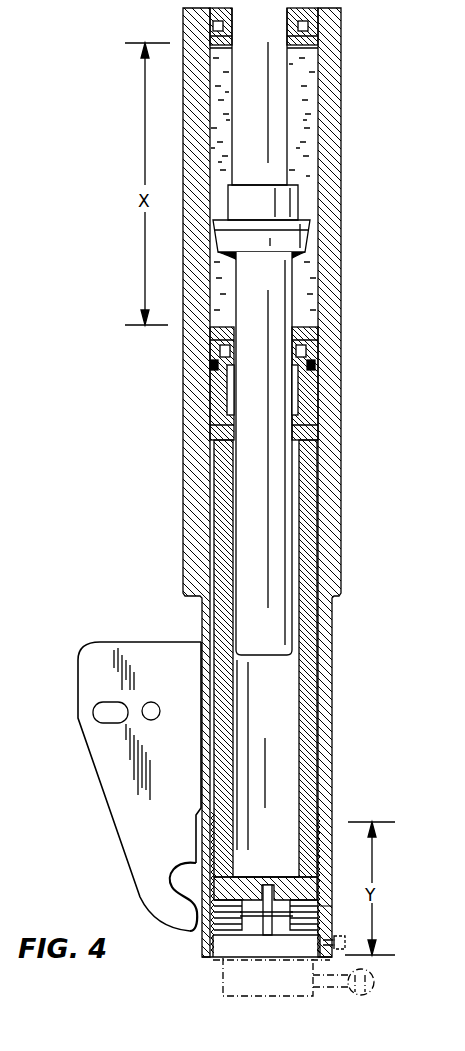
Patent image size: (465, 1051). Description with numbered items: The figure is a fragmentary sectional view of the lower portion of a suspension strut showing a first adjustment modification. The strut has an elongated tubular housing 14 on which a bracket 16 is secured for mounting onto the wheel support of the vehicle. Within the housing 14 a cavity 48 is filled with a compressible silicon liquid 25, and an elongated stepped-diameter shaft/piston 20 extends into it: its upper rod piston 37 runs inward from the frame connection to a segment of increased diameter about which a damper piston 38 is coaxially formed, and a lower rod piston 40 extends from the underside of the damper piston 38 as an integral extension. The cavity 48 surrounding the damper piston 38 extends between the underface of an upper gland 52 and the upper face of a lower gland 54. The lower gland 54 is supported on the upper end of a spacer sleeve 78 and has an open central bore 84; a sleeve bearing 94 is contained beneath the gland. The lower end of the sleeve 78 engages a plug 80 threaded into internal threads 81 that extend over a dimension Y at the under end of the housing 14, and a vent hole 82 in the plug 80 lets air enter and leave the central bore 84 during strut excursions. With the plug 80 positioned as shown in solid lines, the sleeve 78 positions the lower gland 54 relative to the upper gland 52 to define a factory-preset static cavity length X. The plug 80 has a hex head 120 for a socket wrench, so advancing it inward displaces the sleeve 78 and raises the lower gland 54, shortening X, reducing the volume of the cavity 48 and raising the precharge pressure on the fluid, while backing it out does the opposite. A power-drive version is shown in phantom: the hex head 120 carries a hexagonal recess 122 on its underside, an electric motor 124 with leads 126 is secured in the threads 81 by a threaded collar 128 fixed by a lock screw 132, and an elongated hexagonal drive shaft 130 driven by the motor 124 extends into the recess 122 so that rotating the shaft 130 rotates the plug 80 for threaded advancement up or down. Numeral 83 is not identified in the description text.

The tubular housing 14 is at (330, 535).
The bracket 16 is at (105, 762).
The shaft/piston 20 is at (252, 62).
The compressible silicon liquid 25 is at (303, 150).
The upper rod piston 37 is at (277, 100).
The damper piston 38 is at (307, 227).
The lower rod piston 40 is at (277, 630).
The cavity 48 is at (307, 133).
The upper gland 52 is at (300, 17).
The lower gland 54 is at (313, 392).
The spacer sleeve 78 is at (313, 758).
The plug 80 is at (210, 928).
The threads 81 is at (320, 822).
The vent hole 82 is at (233, 873).
The hook 83 is at (184, 868).
The central bore 84 is at (286, 719).
The sleeve bearing 94 is at (312, 412).
The hex head 120 is at (322, 910).
The hexagonal recess 122 is at (318, 880).
The electric motor 124 is at (222, 990).
The leads 126 is at (364, 985).
The threaded collar 128 is at (256, 962).
The hexagonal drive shaft 130 is at (340, 918).
The lock screw 132 is at (348, 945).